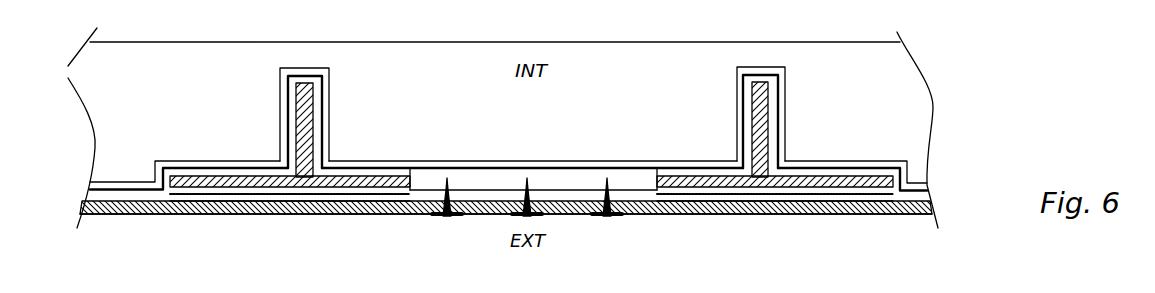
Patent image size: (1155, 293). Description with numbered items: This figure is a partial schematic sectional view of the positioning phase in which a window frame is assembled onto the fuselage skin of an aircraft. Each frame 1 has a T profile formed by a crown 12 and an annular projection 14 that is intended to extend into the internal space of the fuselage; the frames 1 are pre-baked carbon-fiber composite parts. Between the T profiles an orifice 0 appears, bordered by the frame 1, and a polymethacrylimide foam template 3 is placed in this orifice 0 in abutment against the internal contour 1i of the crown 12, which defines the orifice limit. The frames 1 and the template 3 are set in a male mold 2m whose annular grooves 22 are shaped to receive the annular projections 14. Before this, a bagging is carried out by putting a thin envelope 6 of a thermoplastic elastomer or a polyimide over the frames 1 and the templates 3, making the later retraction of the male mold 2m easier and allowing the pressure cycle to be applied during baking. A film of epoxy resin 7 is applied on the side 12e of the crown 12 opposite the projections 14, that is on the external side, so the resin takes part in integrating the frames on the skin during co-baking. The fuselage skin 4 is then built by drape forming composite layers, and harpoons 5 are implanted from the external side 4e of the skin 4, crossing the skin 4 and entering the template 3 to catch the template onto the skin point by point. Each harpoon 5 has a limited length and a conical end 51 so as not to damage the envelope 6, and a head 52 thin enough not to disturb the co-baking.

The male mold 2m is at (132, 73).
The frame 1 is at (530, 118).
The internal contour 1i is at (411, 184).
The template 3 is at (482, 178).
The fuselage skin 4 is at (340, 217).
The external side 4e is at (148, 217).
The harpoon 5 is at (553, 215).
The bagging envelope 6 is at (120, 182).
The epoxy resin film 7 is at (294, 200).
The crown 12 is at (195, 180).
The side of the crown 12e is at (230, 196).
The annular projection 14 is at (305, 95).
The annular groove 22 is at (330, 78).
The orifice 0 is at (566, 162).
The conical end 51 is at (527, 178).
The head 52 is at (447, 218).